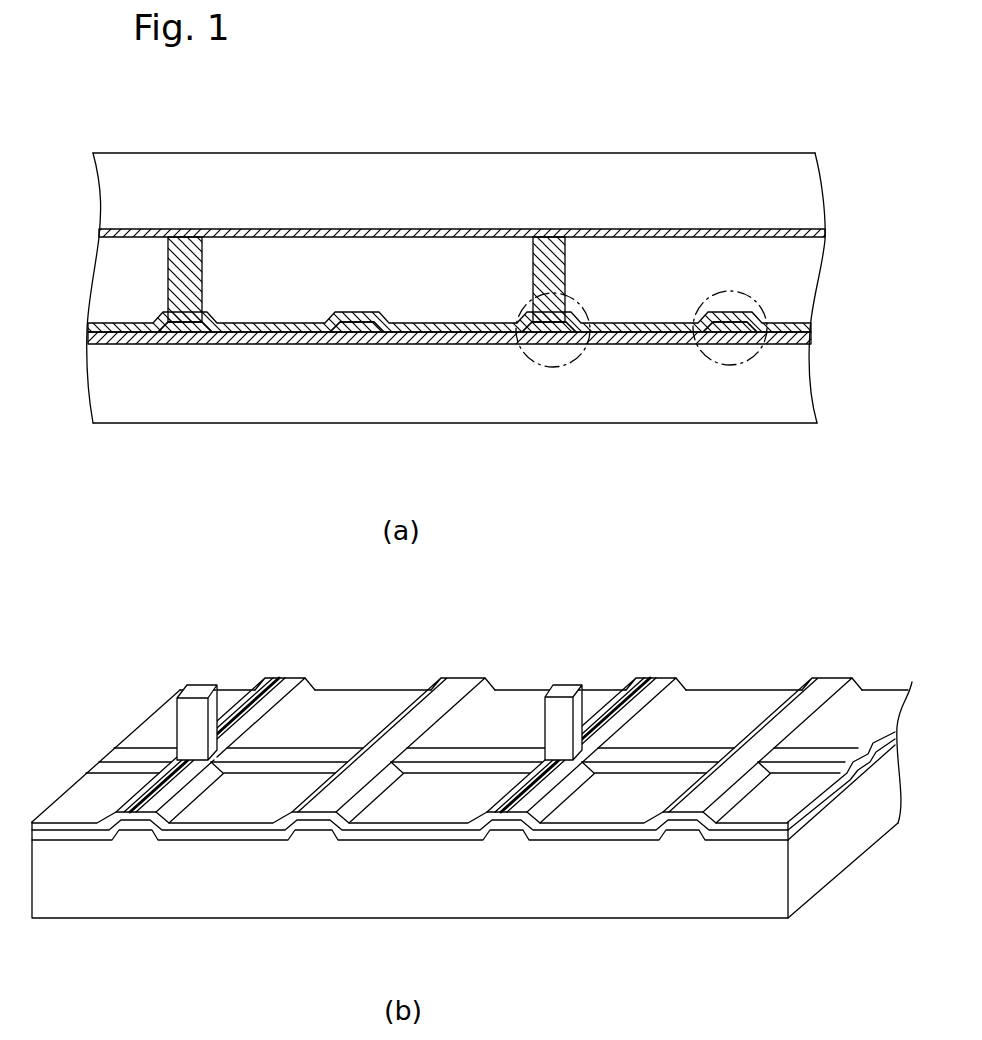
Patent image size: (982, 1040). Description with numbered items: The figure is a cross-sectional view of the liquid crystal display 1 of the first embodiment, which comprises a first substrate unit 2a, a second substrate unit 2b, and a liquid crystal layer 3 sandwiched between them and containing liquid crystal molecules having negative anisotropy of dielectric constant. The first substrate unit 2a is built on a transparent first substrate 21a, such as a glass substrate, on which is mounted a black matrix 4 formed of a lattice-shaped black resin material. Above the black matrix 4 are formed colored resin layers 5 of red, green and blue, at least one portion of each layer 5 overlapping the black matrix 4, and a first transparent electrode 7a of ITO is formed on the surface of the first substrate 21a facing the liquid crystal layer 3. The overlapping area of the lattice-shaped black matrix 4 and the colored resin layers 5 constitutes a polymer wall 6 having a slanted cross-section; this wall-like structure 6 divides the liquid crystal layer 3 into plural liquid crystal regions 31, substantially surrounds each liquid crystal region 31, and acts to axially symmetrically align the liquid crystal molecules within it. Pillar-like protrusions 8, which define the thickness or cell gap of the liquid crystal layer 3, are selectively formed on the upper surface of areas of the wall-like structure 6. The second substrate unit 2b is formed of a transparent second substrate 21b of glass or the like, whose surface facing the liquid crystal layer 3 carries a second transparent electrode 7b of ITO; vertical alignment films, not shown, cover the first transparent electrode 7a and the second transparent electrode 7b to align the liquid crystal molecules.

The liquid crystal display 1 is at (648, 138).
The first substrate unit 2a is at (489, 394).
The second substrate unit 2b is at (492, 170).
The first substrate 21a is at (176, 403).
The second substrate 21b is at (310, 200).
The liquid crystal layer 3 is at (804, 297).
The liquid crystal region 31 is at (288, 299).
The black matrix 4 is at (197, 340).
The colored resin layer 5 is at (300, 340).
The polymer wall 6 is at (700, 350).
The first transparent electrode 7a is at (433, 344).
The second transparent electrode 7b is at (398, 230).
The pillar-like protrusion 8 is at (192, 250).